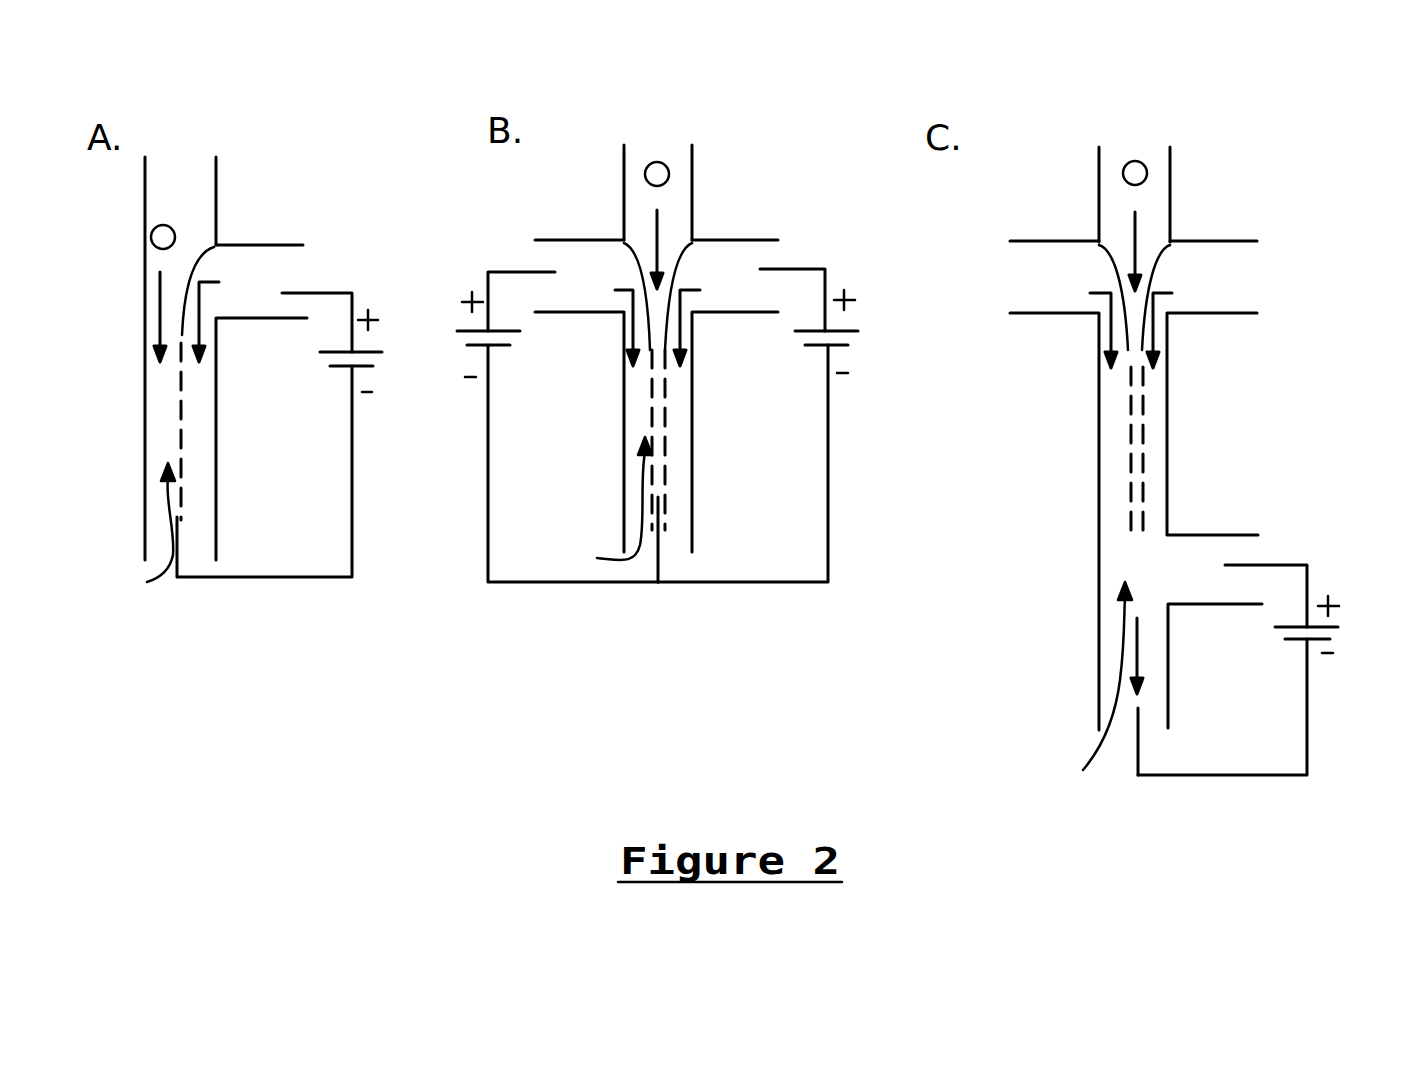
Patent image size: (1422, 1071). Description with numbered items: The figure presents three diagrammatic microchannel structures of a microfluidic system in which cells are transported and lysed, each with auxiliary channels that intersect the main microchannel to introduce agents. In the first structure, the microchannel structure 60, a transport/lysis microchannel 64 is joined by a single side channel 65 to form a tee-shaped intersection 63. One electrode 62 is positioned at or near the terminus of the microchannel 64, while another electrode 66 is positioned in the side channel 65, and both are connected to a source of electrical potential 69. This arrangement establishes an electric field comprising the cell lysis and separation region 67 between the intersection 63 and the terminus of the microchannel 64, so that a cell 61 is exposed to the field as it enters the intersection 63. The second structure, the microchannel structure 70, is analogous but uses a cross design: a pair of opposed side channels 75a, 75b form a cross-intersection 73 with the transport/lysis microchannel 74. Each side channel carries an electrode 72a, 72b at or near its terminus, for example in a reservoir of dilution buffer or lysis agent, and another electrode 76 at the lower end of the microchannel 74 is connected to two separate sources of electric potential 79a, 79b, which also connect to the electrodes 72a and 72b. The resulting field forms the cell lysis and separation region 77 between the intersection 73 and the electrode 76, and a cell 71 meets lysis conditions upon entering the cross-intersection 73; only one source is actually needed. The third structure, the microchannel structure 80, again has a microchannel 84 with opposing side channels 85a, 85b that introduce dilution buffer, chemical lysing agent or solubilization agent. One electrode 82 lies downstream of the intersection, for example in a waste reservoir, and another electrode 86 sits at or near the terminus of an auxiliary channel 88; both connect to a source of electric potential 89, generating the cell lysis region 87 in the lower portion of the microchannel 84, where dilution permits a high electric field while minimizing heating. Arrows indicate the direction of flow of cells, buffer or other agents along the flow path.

The microchannel structure 60 is at (122, 425).
The cell 61 is at (165, 203).
The electrode 62 is at (184, 548).
The tee-shaped intersection 63 is at (227, 297).
The microchannel 64 is at (217, 403).
The side channel 65 is at (257, 240).
The electrode 66 is at (310, 283).
The cell lysis and separation region 67 is at (146, 540).
The source of electrical potential 69 is at (383, 365).
The microchannel structure 70 is at (606, 447).
The cell 71 is at (655, 152).
The electrode 72a is at (510, 267).
The electrode 72b is at (787, 263).
The cross-intersection 73 is at (695, 270).
The transport/lysis microchannel 74 is at (692, 427).
The side channel 75a is at (567, 235).
The side channel 75b is at (723, 235).
The electrode 76 is at (667, 557).
The cell lysis and separation region 77 is at (606, 506).
The source of electric potential 79a is at (508, 358).
The source of electric potential 79b is at (797, 348).
The microchannel structure 80 is at (1078, 463).
The electrode 82 is at (1145, 743).
The microchannel 84 is at (1168, 415).
The side channel 85a is at (1055, 233).
The side channel 85b is at (1202, 233).
The electrode 86 is at (1255, 558).
The cell lysis region 87 is at (1086, 687).
The auxiliary channel 88 is at (1193, 528).
The source of electric potential 89 is at (1348, 645).